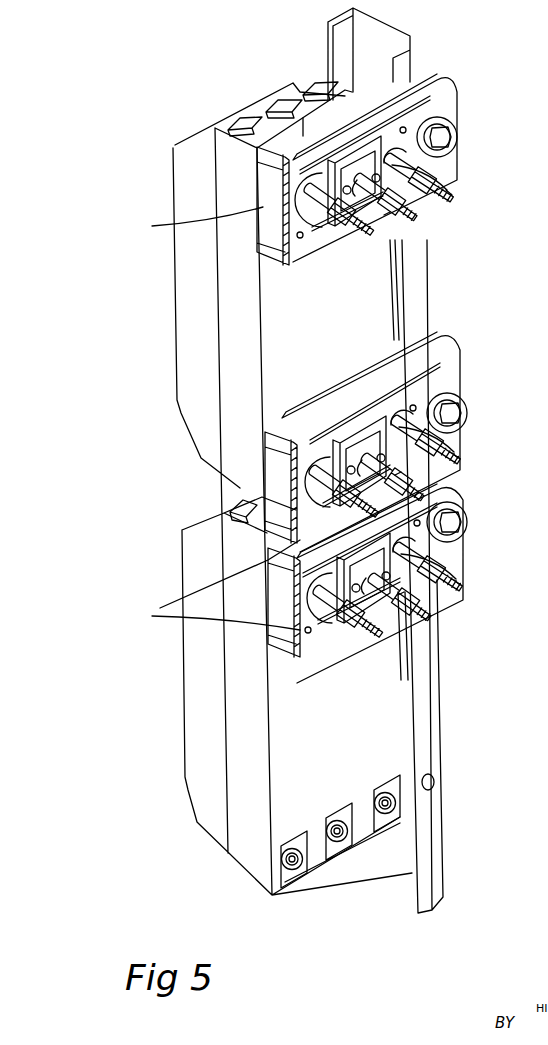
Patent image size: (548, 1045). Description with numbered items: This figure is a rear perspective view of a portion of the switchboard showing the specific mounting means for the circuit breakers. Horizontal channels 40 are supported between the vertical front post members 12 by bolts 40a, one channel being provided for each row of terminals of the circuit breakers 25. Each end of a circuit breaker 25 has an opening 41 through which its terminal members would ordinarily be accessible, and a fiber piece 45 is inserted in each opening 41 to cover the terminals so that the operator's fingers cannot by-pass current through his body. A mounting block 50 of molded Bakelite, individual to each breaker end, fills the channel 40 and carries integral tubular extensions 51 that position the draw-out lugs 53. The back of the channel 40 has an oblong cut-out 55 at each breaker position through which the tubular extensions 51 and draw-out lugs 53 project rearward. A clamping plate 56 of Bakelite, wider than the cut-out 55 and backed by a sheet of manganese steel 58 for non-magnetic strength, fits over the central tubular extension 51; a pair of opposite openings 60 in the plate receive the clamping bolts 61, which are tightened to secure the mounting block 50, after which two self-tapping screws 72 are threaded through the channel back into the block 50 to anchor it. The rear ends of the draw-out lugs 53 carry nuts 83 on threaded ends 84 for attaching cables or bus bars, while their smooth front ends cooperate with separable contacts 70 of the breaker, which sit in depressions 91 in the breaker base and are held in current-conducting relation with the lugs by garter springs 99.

The vertical front post member 12 is at (368, 52).
The circuit breaker 25 is at (205, 325).
The horizontal channel 40 is at (430, 83).
The bolt 40a is at (452, 137).
The top and bottom opening 41 is at (219, 505).
The fiber piece 45 is at (316, 120).
The mounting block 50 is at (282, 214).
The tubular extension 51 is at (332, 210).
The draw-out lug 53 is at (428, 200).
The oblong cut-out 55 is at (440, 195).
The clamping plate 56 is at (363, 130).
The sheet of manganese steel 58 is at (366, 395).
The opening 60 is at (343, 158).
The clamping bolt 61 is at (366, 375).
The separable contact 70 is at (291, 868).
The self-tapping screw 72 is at (440, 118).
The nut 83 is at (428, 174).
The threaded end 84 is at (449, 190).
The depression 91 is at (297, 836).
The garter spring 99 is at (283, 845).